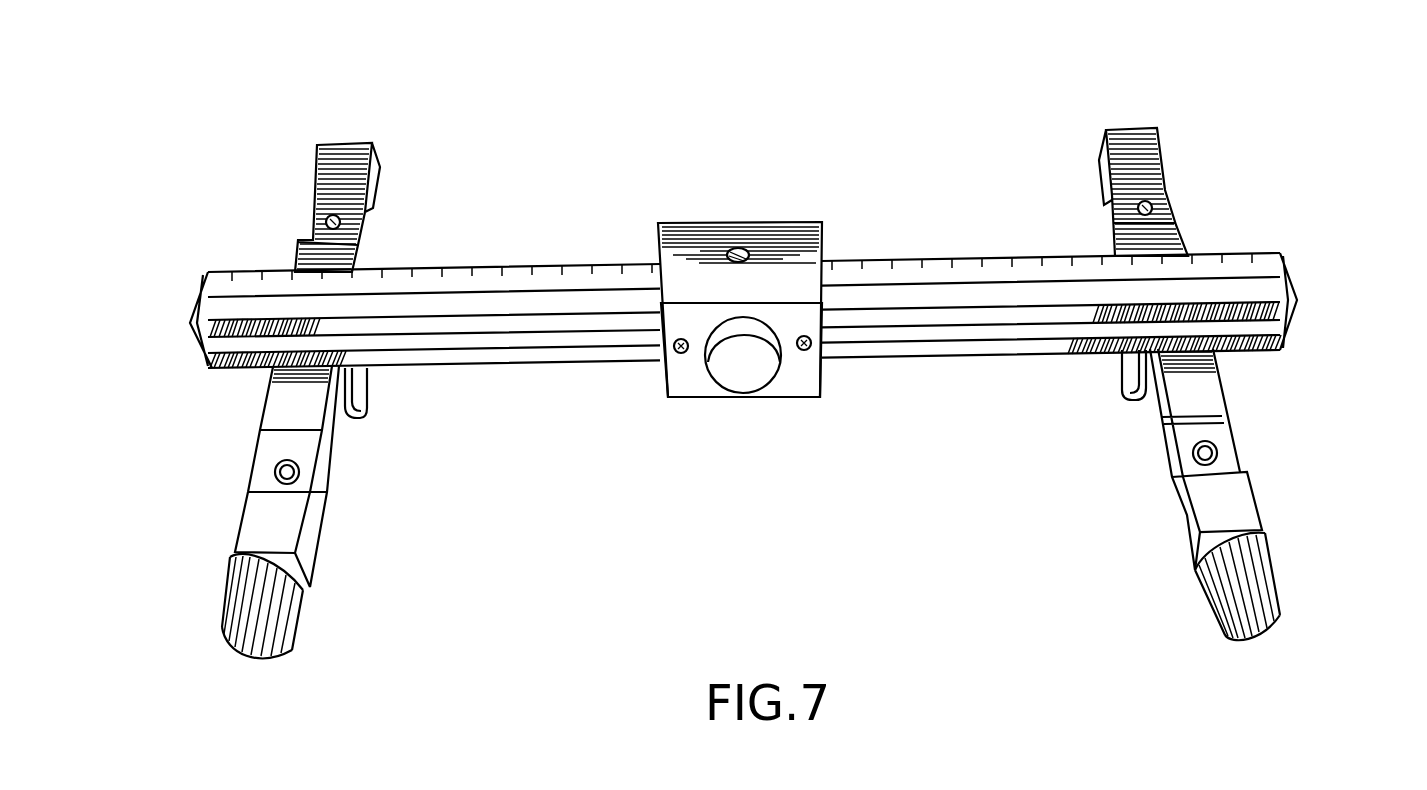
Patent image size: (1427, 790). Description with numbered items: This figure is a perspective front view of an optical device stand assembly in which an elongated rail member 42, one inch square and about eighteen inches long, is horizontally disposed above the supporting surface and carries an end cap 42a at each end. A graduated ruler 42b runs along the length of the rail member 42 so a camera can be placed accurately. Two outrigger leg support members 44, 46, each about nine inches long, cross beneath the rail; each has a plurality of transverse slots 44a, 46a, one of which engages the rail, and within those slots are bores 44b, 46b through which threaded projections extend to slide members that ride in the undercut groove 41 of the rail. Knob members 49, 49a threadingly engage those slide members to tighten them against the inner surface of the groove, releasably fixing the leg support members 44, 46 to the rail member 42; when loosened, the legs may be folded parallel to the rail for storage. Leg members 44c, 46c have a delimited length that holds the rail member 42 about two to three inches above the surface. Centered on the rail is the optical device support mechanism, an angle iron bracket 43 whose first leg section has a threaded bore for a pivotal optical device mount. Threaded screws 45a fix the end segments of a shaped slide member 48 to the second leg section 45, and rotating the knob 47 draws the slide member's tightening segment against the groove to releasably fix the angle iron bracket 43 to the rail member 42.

The undercut groove 41 is at (613, 338).
The rail member 42 is at (684, 274).
The end cap 42a is at (193, 292).
The graduated ruler 42b is at (592, 278).
The angle iron bracket 43 is at (786, 304).
The leg support member 44 is at (281, 399).
The transverse slot 44a is at (377, 208).
The bore 44b is at (332, 216).
The leg member 44c is at (232, 607).
The second leg section 45 is at (786, 416).
The threaded screw 45a is at (682, 354).
The leg support member 46 is at (1242, 340).
The transverse slot 46a is at (1119, 203).
The bore 46b is at (1148, 204).
The leg member 46c is at (1263, 585).
The knob 47 is at (747, 373).
The slide member 48 is at (833, 337).
The knob member 49 is at (367, 408).
The knob member 49a is at (1133, 397).